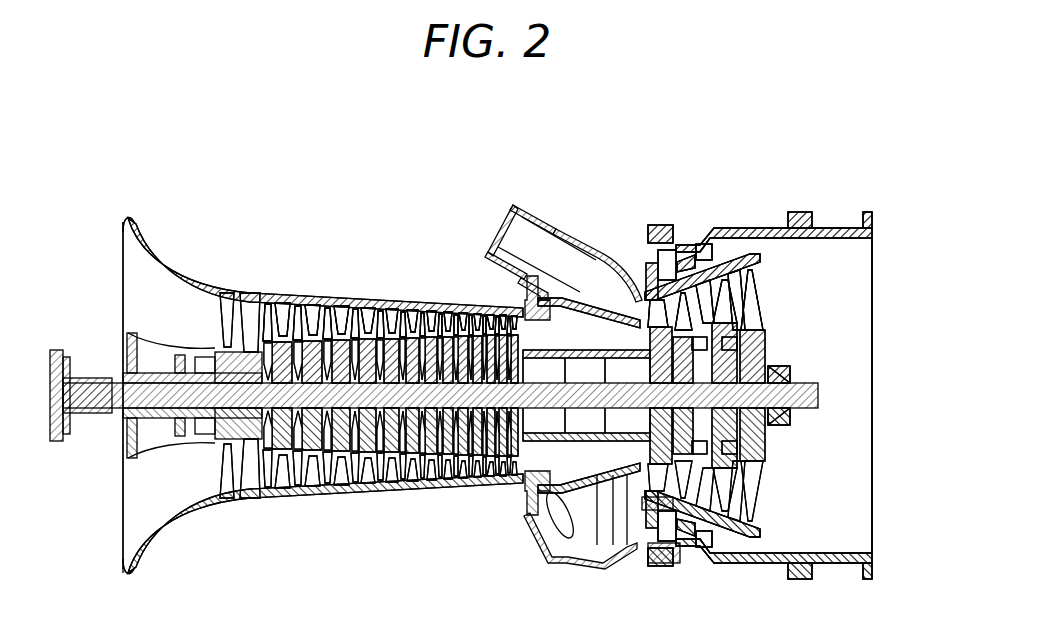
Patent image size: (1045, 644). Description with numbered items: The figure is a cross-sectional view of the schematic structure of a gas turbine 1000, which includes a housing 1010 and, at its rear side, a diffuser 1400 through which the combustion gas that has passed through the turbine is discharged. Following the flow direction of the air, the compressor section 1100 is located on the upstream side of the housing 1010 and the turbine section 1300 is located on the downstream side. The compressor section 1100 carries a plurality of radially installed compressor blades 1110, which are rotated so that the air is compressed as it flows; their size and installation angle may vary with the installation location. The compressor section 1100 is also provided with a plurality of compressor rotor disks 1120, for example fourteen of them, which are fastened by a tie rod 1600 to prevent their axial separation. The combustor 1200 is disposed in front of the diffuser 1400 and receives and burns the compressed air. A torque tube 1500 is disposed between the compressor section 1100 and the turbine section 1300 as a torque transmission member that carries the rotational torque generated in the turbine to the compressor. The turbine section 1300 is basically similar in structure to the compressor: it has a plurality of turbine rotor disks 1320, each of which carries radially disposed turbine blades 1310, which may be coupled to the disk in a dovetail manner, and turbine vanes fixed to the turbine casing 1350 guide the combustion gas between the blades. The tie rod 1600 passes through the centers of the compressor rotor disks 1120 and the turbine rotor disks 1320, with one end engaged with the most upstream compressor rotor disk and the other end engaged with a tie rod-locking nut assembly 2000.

The gas turbine 1000 is at (742, 104).
The housing 1010 is at (368, 277).
The compressor section 1100 is at (524, 606).
The compressor blade 1110 is at (290, 320).
The compressor rotor disk 1120 is at (250, 320).
The combustor 1200 is at (519, 186).
The turbine section 1300 is at (766, 606).
The turbine blade 1310 is at (718, 312).
The turbine rotor disk 1320 is at (760, 312).
The turbine casing 1350 is at (683, 242).
The diffuser 1400 is at (836, 212).
The torque tube 1500 is at (549, 348).
The tie rod 1600 is at (808, 408).
The tie rod-locking nut assembly 2000 is at (790, 376).